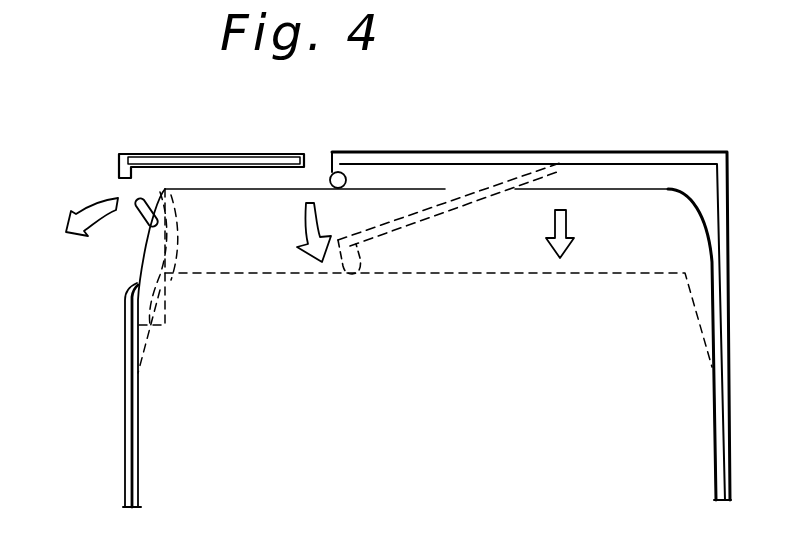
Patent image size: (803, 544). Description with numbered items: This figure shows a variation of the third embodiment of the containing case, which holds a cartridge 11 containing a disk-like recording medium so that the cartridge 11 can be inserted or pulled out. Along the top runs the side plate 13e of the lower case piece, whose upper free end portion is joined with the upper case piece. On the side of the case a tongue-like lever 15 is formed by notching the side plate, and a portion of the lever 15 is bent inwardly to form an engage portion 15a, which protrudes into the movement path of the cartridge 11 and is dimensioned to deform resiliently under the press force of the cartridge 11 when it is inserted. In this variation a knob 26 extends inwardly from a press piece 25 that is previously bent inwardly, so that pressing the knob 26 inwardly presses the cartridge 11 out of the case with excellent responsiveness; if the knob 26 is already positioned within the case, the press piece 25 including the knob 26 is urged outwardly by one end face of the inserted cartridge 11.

The cartridge 11 is at (418, 412).
The side plate 13e is at (200, 156).
The lever 15 is at (125, 356).
The engage portion 15a is at (138, 247).
The press piece 25 is at (521, 153).
The knob 26 is at (333, 171).